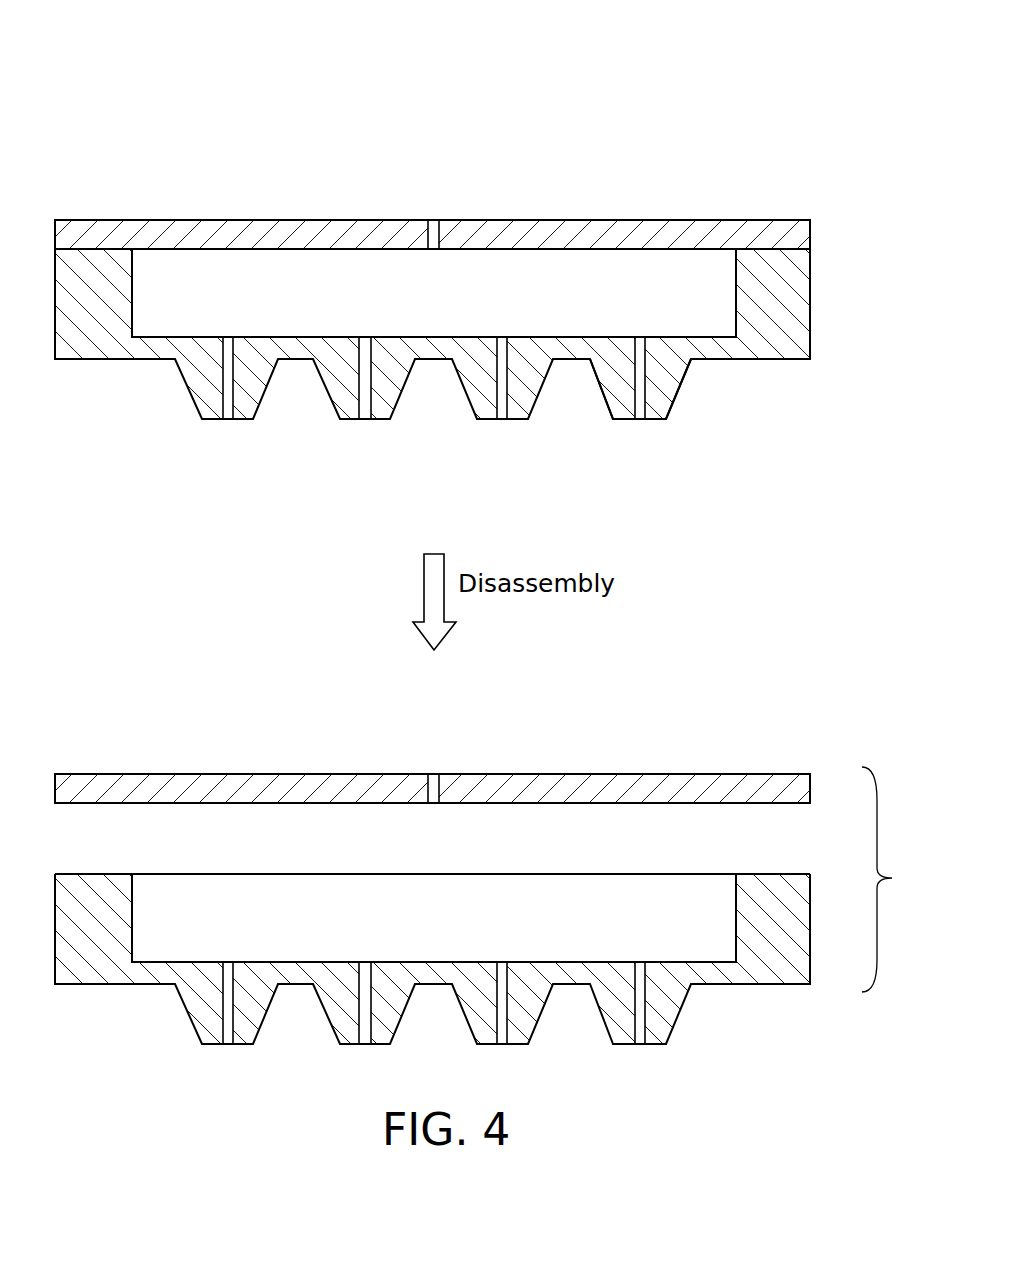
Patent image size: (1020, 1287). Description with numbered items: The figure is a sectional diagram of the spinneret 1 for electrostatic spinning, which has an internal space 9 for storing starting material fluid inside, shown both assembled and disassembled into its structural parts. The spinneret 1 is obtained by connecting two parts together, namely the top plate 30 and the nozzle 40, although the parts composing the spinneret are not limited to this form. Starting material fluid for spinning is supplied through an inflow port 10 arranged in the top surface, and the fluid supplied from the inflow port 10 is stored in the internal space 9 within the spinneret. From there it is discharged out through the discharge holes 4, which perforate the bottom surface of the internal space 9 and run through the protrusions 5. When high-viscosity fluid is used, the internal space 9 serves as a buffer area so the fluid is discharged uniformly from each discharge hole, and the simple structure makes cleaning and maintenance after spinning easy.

The spinneret for electrostatic spinning 1 is at (720, 126).
The discharge holes 4 is at (228, 419).
The protrusions 5 is at (680, 385).
The internal space 9 is at (599, 272).
The inflow port 10 is at (437, 220).
The top plate 30 is at (792, 772).
The nozzle 40 is at (787, 874).